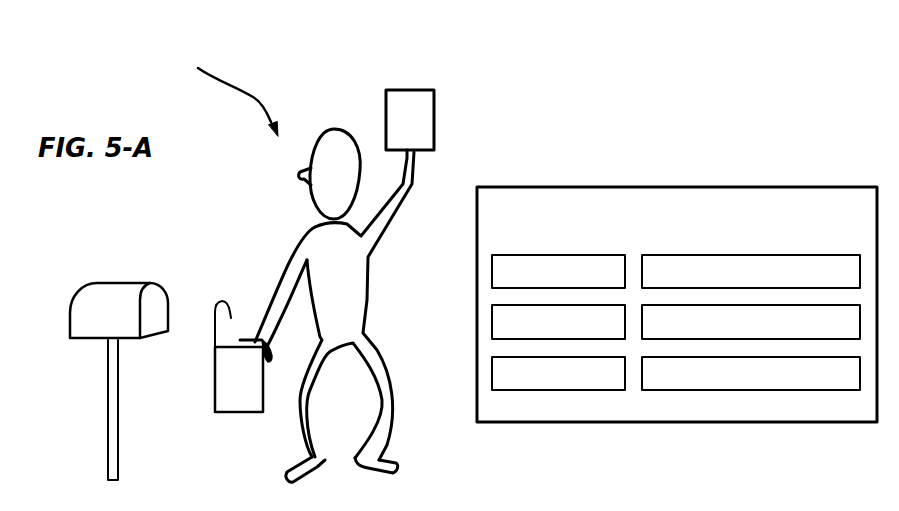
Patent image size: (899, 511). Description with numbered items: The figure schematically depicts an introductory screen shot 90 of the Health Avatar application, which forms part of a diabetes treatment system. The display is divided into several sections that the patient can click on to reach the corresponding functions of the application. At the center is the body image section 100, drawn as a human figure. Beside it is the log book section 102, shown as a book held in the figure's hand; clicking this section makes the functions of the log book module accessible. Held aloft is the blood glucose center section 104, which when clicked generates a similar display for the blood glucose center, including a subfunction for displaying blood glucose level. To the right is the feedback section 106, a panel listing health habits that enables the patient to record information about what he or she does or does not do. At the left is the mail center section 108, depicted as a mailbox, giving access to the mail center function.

The screen shot 90 is at (695, 75).
The body image section 100 is at (370, 292).
The log book section 102 is at (232, 318).
The blood glucose center section 104 is at (413, 90).
The feedback section 106 is at (627, 187).
The mail center section 108 is at (168, 298).